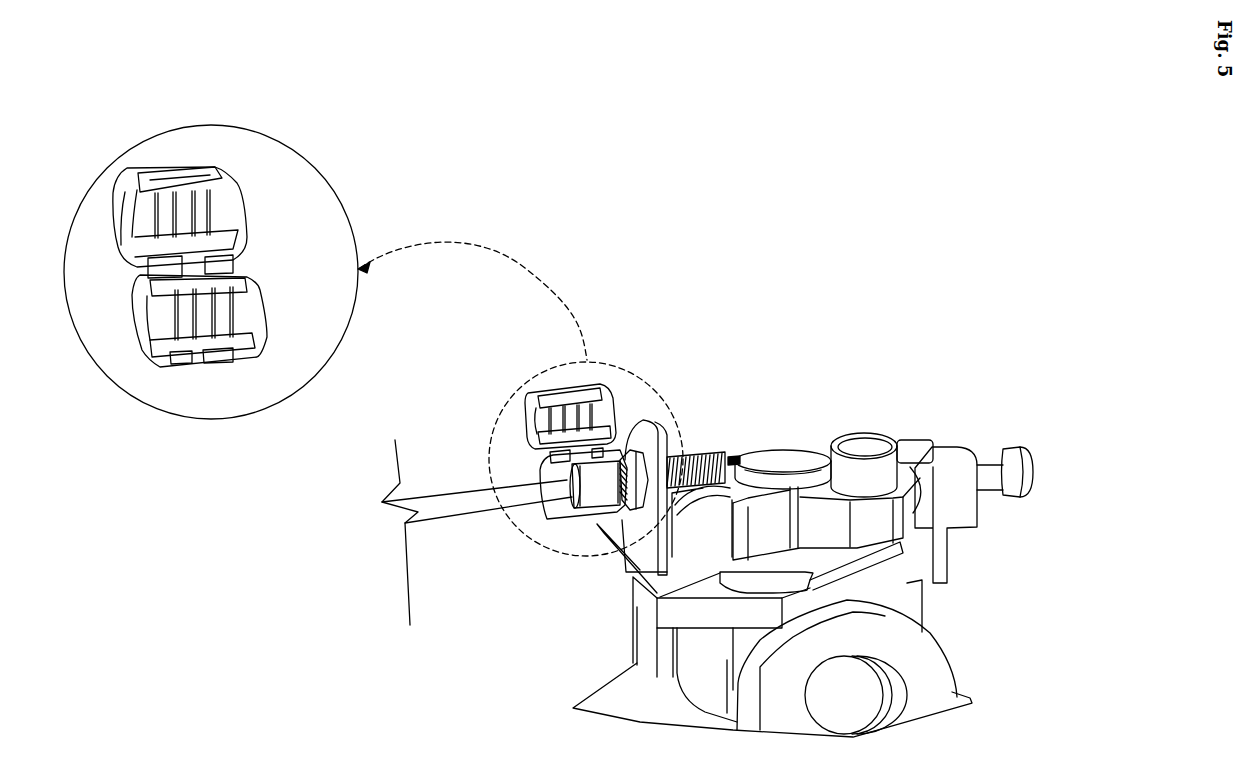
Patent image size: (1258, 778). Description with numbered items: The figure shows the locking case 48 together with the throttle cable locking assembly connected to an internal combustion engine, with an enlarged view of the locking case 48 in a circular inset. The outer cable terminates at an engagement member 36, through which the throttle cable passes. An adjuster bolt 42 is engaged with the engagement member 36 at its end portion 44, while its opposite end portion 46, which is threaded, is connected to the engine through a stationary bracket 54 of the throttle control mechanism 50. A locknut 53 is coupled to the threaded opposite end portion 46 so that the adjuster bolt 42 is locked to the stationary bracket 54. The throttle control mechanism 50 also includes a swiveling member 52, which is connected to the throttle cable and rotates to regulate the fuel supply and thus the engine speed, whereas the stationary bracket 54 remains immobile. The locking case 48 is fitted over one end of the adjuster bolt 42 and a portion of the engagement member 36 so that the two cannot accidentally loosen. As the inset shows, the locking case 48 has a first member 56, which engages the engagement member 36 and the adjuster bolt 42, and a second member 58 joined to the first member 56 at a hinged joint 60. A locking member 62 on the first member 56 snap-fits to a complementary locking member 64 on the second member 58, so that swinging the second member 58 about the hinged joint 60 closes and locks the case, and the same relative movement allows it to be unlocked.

The engagement member 36 is at (552, 477).
The adjuster bolt 42 is at (620, 510).
The end portion 44 is at (592, 510).
The opposite end portion 46 is at (710, 450).
The locking case 48 is at (537, 383).
The throttle control mechanism 50 is at (968, 422).
The swiveling member 52 is at (797, 455).
The locknut 53 is at (641, 422).
The stationary bracket 54 is at (663, 430).
The first member 56 is at (263, 345).
The second member 58 is at (233, 173).
The hinged joint 60 is at (247, 264).
The locking member 62 is at (217, 363).
The complementary locking member 64 is at (183, 166).